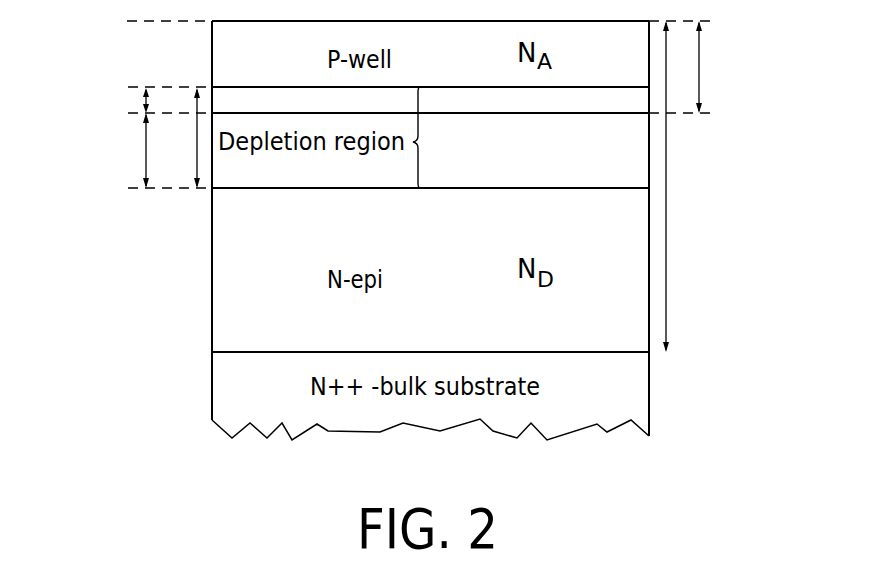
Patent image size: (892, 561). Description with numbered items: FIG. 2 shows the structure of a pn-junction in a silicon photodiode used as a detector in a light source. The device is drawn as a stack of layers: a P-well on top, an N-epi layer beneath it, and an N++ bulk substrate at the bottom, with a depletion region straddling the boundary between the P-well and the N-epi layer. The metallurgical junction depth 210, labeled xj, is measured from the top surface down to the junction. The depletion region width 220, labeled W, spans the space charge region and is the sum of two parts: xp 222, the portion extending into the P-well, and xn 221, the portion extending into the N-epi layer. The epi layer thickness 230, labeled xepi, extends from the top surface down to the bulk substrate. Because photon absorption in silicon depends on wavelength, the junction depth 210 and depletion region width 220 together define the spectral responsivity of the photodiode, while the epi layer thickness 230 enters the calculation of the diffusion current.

The junction depth 210 is at (733, 65).
The depletion region width 220 is at (180, 163).
The xn 221 is at (97, 150).
The xp 222 is at (97, 96).
The epi layer thickness 230 is at (727, 197).